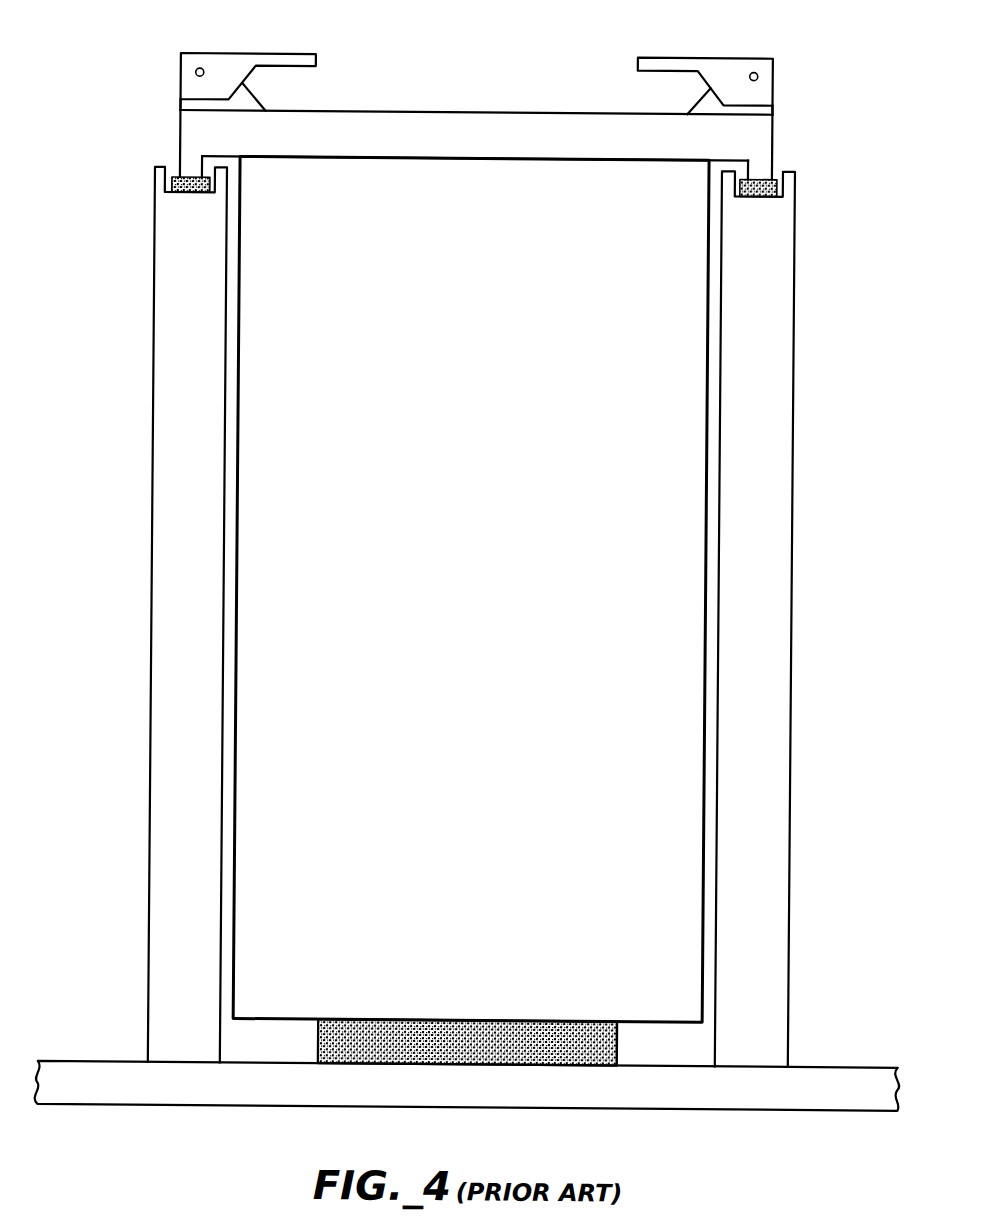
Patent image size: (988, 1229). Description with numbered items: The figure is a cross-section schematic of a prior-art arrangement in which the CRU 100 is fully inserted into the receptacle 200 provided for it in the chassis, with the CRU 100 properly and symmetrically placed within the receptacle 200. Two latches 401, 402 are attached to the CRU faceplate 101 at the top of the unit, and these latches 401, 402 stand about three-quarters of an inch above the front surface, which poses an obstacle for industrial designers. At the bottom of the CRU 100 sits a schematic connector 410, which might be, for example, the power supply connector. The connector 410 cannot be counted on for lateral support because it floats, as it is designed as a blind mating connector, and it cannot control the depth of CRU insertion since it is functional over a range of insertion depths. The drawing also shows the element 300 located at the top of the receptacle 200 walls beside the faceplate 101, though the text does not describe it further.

The CRU 100 is at (494, 469).
The CRU faceplate 101 is at (471, 138).
The receptacle 200 is at (151, 555).
The seal / gasket 300 is at (767, 197).
The latch 401 is at (245, 51).
The latch 402 is at (683, 49).
The connector 410 is at (425, 1069).